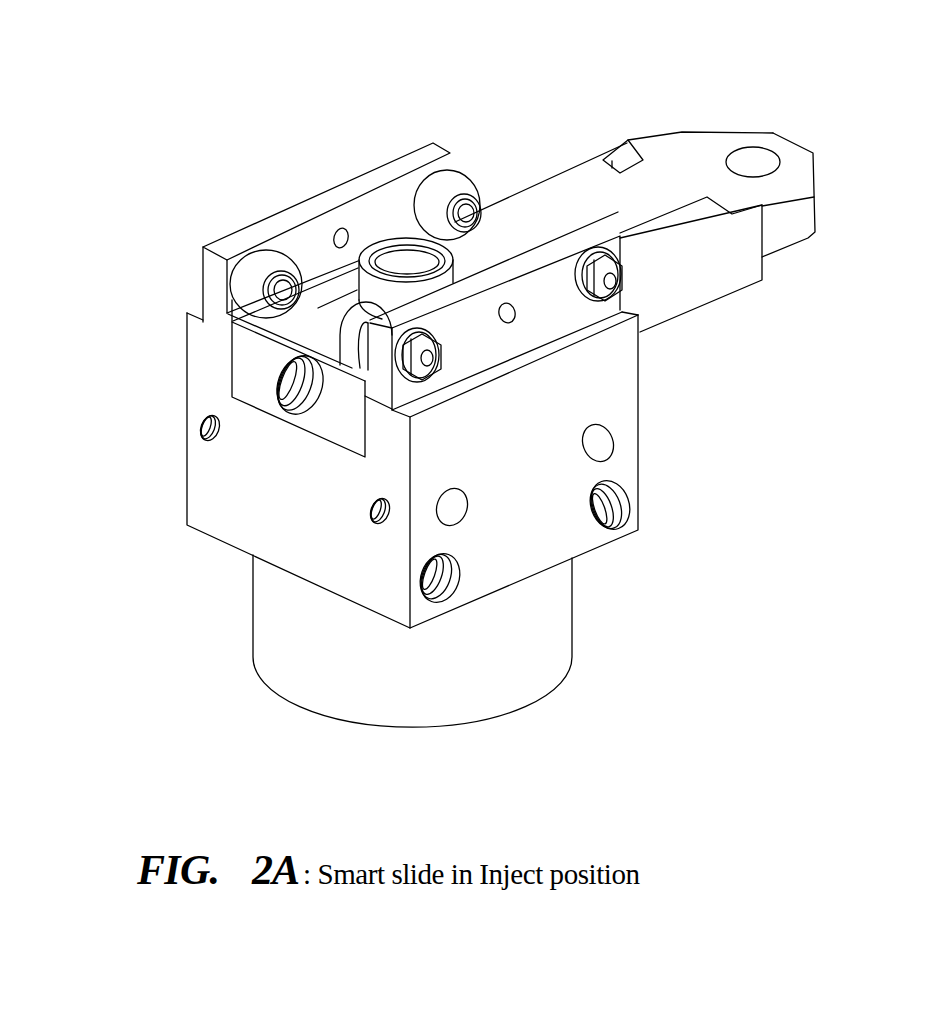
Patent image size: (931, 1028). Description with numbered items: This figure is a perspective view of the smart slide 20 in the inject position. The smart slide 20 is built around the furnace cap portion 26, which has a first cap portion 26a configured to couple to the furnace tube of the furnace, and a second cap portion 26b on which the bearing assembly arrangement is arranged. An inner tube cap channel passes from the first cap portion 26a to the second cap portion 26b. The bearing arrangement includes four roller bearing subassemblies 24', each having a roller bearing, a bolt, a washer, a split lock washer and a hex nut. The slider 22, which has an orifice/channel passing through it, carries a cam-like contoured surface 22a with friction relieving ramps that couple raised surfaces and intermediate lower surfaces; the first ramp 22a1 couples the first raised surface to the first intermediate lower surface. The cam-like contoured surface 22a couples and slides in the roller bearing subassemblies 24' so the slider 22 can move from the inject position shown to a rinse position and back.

The smart slide 20 is at (249, 81).
The slider 22 is at (613, 143).
The cam-like contoured surface 22a is at (677, 187).
The first ramp 22a1 is at (615, 148).
The roller bearing subassemblies 24' is at (426, 232).
The furnace cap portion 26 is at (149, 554).
The first cap portion 26a is at (273, 605).
The second cap portion 26b is at (383, 367).